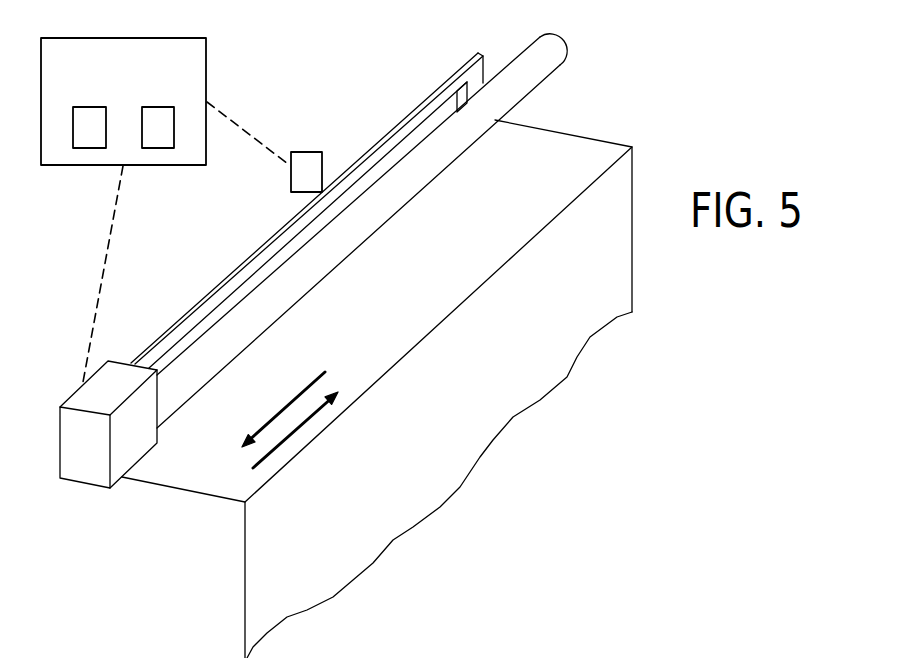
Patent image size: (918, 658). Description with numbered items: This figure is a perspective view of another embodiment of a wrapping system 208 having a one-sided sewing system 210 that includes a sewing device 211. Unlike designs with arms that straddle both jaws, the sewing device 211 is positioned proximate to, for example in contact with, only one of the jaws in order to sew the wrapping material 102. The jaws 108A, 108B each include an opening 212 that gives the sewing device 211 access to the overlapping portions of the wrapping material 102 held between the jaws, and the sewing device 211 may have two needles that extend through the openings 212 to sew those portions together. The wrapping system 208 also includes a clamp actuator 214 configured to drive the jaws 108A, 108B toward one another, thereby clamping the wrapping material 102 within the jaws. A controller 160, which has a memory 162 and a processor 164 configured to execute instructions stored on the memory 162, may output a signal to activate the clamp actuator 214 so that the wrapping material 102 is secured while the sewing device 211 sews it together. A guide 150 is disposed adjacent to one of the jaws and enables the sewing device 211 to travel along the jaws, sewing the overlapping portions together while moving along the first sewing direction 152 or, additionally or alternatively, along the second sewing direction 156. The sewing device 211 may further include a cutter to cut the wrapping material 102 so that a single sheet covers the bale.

The wrapping material 102 is at (213, 483).
The first jaw 108A is at (447, 82).
The second jaw 108B is at (481, 67).
The guide 150 is at (545, 68).
The first sewing direction 152 is at (283, 405).
The second sewing direction 156 is at (293, 435).
The controller 160 is at (207, 70).
The memory 162 is at (88, 148).
The processor 164 is at (157, 148).
The wrapping system 208 is at (667, 100).
The one-sided sewing system 210 is at (117, 500).
The sewing device 211 is at (147, 423).
The opening 212 is at (393, 157).
The clamp actuator 214 is at (305, 152).